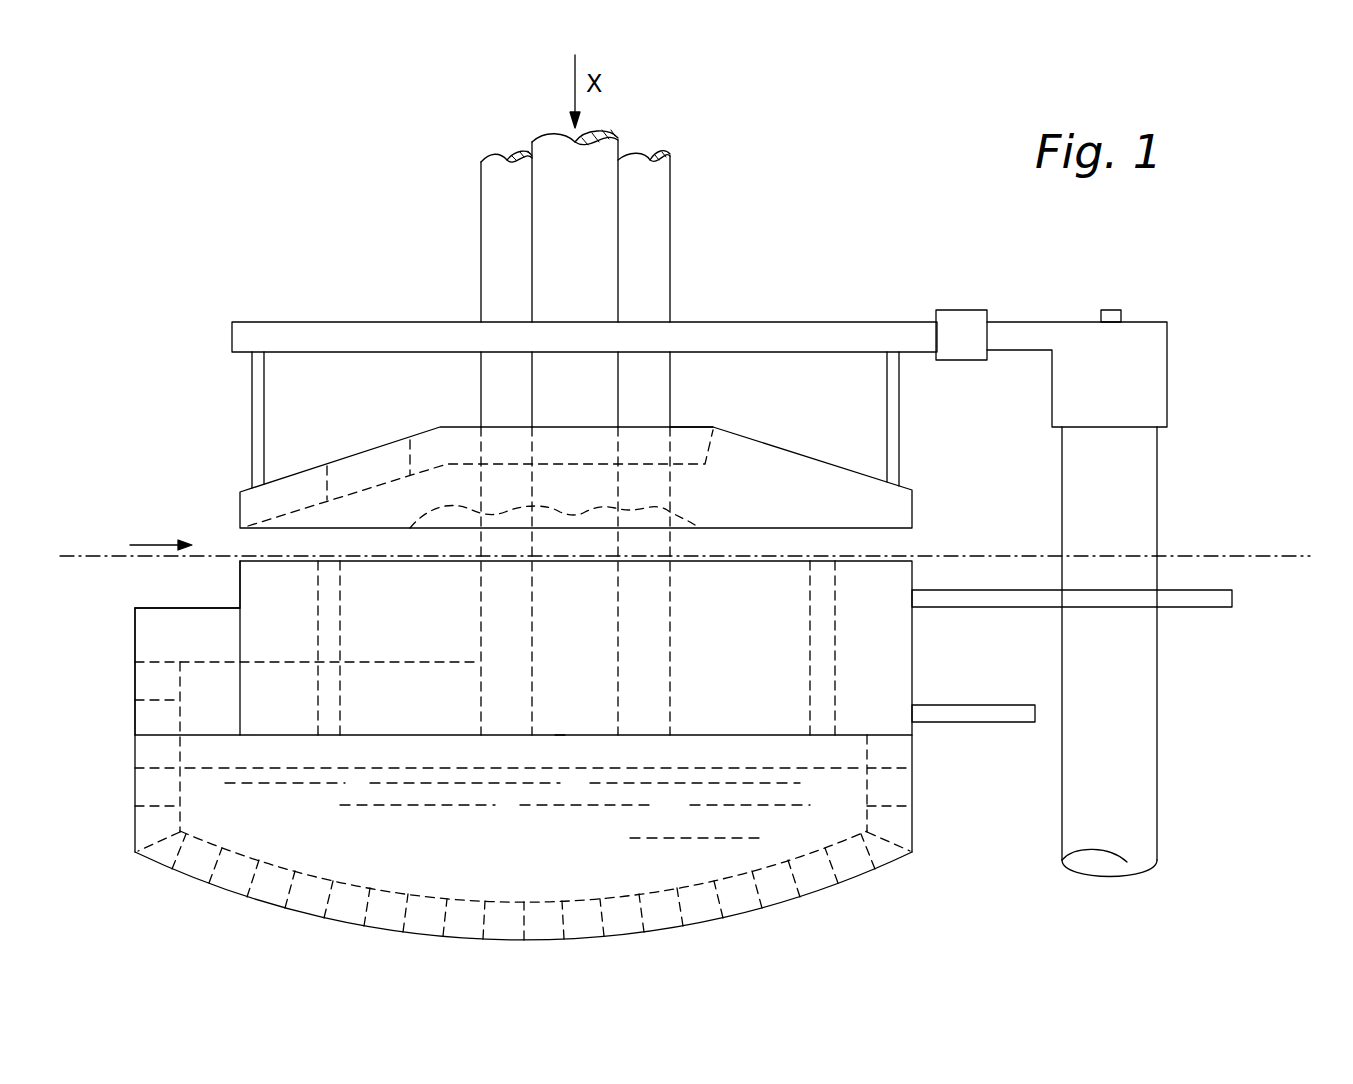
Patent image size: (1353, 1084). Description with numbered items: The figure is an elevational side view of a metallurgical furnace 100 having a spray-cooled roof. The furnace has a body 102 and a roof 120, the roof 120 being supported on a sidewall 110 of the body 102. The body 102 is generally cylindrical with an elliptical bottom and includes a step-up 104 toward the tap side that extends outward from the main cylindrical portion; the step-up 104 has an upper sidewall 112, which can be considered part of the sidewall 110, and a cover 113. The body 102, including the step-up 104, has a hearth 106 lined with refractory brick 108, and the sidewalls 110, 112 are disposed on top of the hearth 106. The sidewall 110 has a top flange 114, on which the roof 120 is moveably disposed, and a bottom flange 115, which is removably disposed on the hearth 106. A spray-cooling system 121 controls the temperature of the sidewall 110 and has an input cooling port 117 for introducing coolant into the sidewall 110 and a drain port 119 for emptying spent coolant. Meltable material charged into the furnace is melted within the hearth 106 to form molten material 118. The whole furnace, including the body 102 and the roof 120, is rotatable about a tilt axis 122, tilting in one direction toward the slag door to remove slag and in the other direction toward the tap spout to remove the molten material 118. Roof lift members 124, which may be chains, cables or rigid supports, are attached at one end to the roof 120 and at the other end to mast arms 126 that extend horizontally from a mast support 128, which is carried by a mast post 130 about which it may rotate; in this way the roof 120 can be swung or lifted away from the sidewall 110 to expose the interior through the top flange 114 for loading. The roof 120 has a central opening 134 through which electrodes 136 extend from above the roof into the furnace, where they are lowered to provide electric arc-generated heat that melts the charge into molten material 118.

The metallurgical furnace 100 is at (198, 202).
The body 102 is at (915, 817).
The step-up 104 is at (150, 647).
The hearth 106 is at (915, 752).
The refractory brick 108 is at (296, 917).
The sidewall 110 is at (238, 596).
The upper sidewall 112 is at (133, 622).
The cover 113 is at (137, 605).
The top flange 114 is at (248, 546).
The bottom flange 115 is at (560, 735).
The input cooling port 117 is at (1209, 590).
The molten material 118 is at (525, 813).
The drain port 119 is at (983, 705).
The roof 120 is at (364, 453).
The spray-cooling system 121 is at (1256, 597).
The tilt axis 122 is at (952, 555).
The roof lift members 124 is at (250, 409).
The mast arms 126 is at (773, 333).
The mast support 128 is at (1158, 742).
The mast post 130 is at (1110, 310).
The central opening 134 is at (700, 437).
The electrodes 136 is at (467, 188).